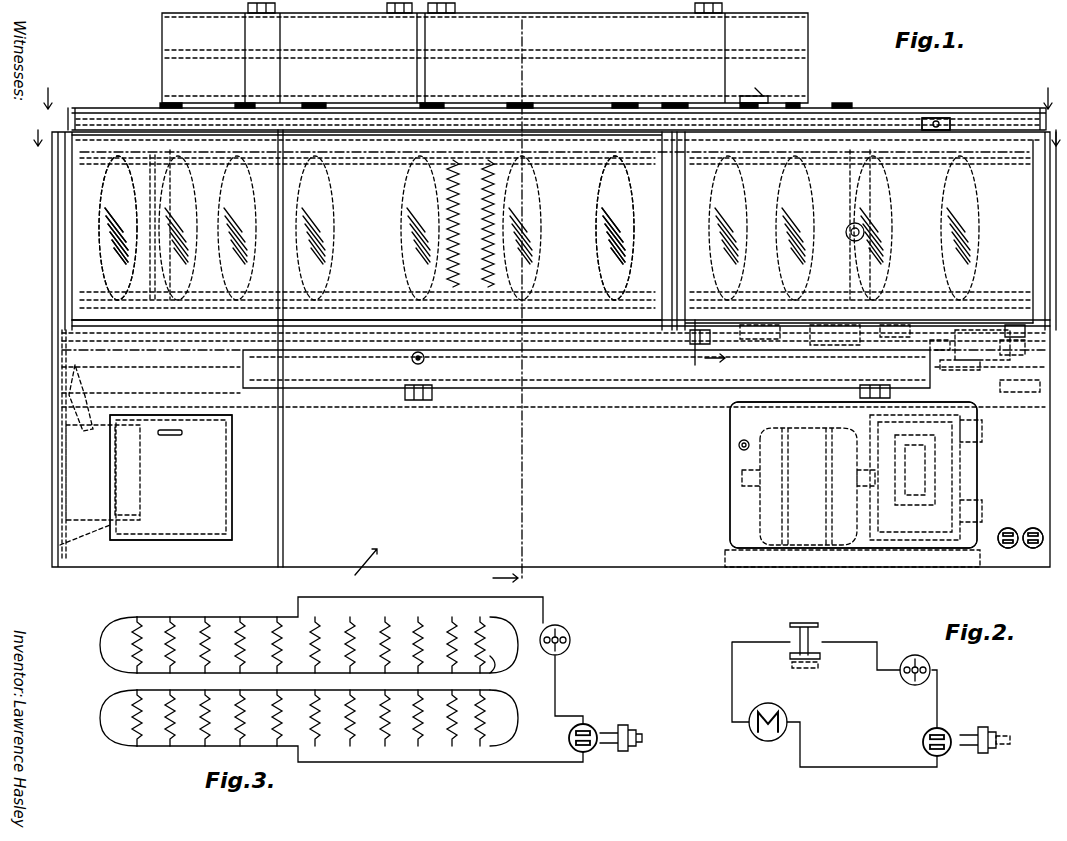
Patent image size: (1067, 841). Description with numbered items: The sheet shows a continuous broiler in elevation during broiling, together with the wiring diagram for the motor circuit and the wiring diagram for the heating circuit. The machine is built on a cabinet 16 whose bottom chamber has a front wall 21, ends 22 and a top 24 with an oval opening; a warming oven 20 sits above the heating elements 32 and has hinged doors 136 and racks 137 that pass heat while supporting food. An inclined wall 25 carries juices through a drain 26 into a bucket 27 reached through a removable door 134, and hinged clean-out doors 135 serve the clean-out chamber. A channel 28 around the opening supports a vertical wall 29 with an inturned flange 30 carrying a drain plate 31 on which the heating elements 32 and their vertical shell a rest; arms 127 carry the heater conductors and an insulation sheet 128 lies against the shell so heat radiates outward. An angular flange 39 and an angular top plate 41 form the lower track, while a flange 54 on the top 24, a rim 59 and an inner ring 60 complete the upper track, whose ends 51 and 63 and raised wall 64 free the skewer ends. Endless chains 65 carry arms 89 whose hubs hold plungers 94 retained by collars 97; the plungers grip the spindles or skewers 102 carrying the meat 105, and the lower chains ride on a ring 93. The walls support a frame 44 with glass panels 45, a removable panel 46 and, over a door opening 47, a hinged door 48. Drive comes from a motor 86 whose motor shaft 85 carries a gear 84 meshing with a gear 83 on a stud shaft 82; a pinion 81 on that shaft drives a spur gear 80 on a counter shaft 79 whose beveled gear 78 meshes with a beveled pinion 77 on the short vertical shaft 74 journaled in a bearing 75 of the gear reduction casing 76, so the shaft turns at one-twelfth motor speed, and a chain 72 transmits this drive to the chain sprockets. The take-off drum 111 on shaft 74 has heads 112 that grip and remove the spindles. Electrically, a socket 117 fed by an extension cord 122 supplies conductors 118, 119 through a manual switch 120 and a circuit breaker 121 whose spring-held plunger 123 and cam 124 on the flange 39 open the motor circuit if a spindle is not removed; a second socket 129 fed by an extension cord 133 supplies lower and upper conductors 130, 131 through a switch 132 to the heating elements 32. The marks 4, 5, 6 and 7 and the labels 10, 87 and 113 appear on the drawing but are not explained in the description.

In FIG. 1, the section line 4 is at (546, 81).
In FIG. 1, the section line 5 is at (541, 123).
In FIG. 1, the section line 6 is at (516, 305).
In FIG. 1, the handle 7 is at (742, 100).
In FIG. 1, the cooling tube 10 is at (1008, 257).
In FIG. 1, the cabinet 16 is at (363, 580).
In FIG. 1, the heating cabinet or warming oven 20 is at (168, 33).
In FIG. 1, the front wall 21 is at (448, 517).
In FIG. 1, the ends 22 is at (1048, 440).
In FIG. 1, the top 24 is at (993, 128).
In FIG. 1, the inclined wall or drain 25 is at (873, 370).
In FIG. 1, the drain 26 is at (70, 448).
In FIG. 1, the bucket or container 27 is at (165, 470).
In FIG. 1, the channel 28 is at (807, 363).
In FIG. 1, the vertical wall 29 is at (770, 370).
In FIG. 1, the inturned top flange 30 is at (192, 306).
In FIG. 1, the plate 31 is at (160, 308).
In FIG. 1, the heating elements 32 is at (452, 198).
In FIG. 3, the heating elements 32 is at (310, 727).
In FIG. 1, the angular flange 39 is at (57, 337).
In FIG. 1, the angular top plate 41 is at (108, 308).
In FIG. 1, the frame 44 is at (125, 335).
In FIG. 1, the panels 45 is at (60, 294).
In FIG. 1, the removable panel or door 46 is at (70, 253).
In FIG. 1, the door opening 47 is at (1006, 205).
In FIG. 1, the hinged panel 48 is at (864, 363).
In FIG. 1, the point 51 is at (763, 270).
In FIG. 1, the angular flange 54 is at (130, 160).
In FIG. 1, the rim 59 is at (934, 117).
In FIG. 1, the inner ring 60 is at (470, 109).
In FIG. 1, the end portion 63 is at (736, 155).
In FIG. 1, the raised part or horizontal wall 64 is at (792, 155).
In FIG. 1, the endless drive members or chains 65 is at (902, 116).
In FIG. 1, the chain 72 is at (830, 407).
In FIG. 1, the short vertical shaft 74 is at (925, 376).
In FIG. 1, the bearing 75 is at (1003, 418).
In FIG. 1, the gear reduction casing 76 is at (866, 422).
In FIG. 1, the beveled pinion 77 is at (950, 440).
In FIG. 1, the beveled gear 78 is at (950, 455).
In FIG. 1, the horizontal counter shaft 79 is at (888, 425).
In FIG. 1, the spur gear 80 is at (950, 475).
In FIG. 1, the pinion 81 is at (950, 500).
In FIG. 1, the stud shaft 82 is at (952, 490).
In FIG. 1, the gear 83 is at (918, 530).
In FIG. 1, the gear 84 is at (885, 530).
In FIG. 1, the motor shaft 85 is at (738, 489).
In FIG. 1, the motor 86 is at (750, 467).
In FIG. 2, the motor 86 is at (785, 715).
In FIG. 1, the base 87 is at (735, 567).
In FIG. 1, the arms 89 is at (740, 520).
In FIG. 1, the ring 93 is at (70, 353).
In FIG. 1, the plunger 94 is at (832, 102).
In FIG. 1, the collar 97 is at (849, 104).
In FIG. 1, the spindles, pins or skewers 102 is at (712, 152).
In FIG. 1, the meat 105 is at (750, 203).
In FIG. 1, the concaved receiving drum 111 is at (1018, 183).
In FIG. 1, the flanges or heads 112 is at (980, 152).
In FIG. 1, the switch housing 113 is at (972, 118).
In FIG. 1, the socket 117 is at (1033, 550).
In FIG. 2, the socket 117 is at (946, 728).
In FIG. 2, the conductor 118 is at (847, 767).
In FIG. 1, the conductor 119 is at (991, 362).
In FIG. 2, the conductor 119 is at (938, 688).
In FIG. 1, the switch 120 is at (899, 270).
In FIG. 2, the switch 120 is at (932, 661).
In FIG. 1, the circuit breaker 121 is at (980, 368).
In FIG. 2, the circuit breaker 121 is at (824, 630).
In FIG. 2, the extension cord 122 is at (993, 735).
In FIG. 1, the spring held plunger 123 is at (1010, 383).
In FIG. 1, the cam 124 is at (970, 270).
In FIG. 1, the arms 127 is at (360, 180).
In FIG. 1, the insulation sheet 128 is at (804, 213).
In FIG. 1, the socket 129 is at (1008, 550).
In FIG. 3, the socket 129 is at (597, 724).
In FIG. 3, the lower conductor 130 is at (495, 762).
In FIG. 3, the upper conductor 131 is at (567, 672).
In FIG. 1, the switch 132 is at (812, 270).
In FIG. 3, the switch 132 is at (573, 635).
In FIG. 3, the extension cord 133 is at (631, 730).
In FIG. 1, the removable panel or door 134 is at (140, 545).
In FIG. 1, the hinged clean-out doors 135 is at (574, 398).
In FIG. 1, the hinged doors 136 is at (642, 97).
In FIG. 1, the racks or shelves 137 is at (558, 94).
In FIG. 1, the vertical shell a is at (219, 260).